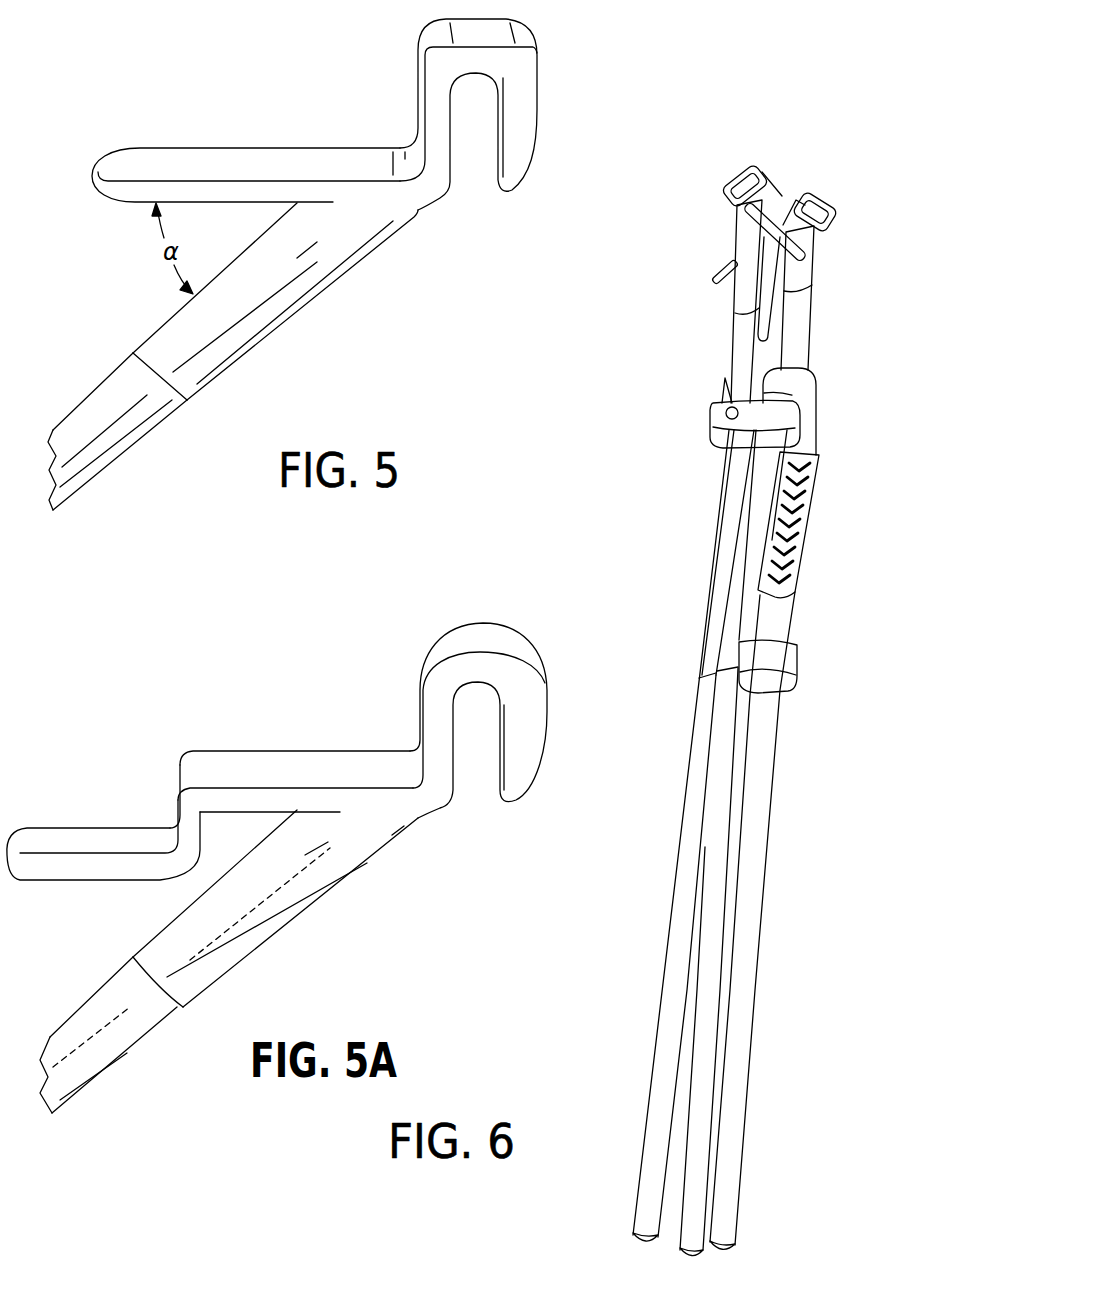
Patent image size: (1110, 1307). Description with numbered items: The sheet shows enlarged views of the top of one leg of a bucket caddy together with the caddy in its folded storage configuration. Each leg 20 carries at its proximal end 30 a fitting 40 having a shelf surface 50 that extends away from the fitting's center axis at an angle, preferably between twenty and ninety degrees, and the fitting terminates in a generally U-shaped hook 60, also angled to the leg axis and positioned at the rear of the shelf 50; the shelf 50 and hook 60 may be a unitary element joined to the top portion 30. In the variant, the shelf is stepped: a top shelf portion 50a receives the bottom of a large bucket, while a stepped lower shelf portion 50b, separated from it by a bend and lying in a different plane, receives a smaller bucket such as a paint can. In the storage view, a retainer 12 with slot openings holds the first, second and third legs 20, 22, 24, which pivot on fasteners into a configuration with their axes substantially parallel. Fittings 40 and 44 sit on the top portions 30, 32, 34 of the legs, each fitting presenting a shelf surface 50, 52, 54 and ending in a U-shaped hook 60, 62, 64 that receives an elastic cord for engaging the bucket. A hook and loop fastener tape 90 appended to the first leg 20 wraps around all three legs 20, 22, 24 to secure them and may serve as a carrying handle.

In FIG. 6, the retainer 12 is at (710, 423).
In FIG. 6, the first leg 20 is at (752, 913).
In FIG. 6, the second leg 22 is at (693, 768).
In FIG. 6, the third leg 24 is at (712, 892).
In FIG. 5, the top portion of first leg 30 is at (102, 445).
In FIG. 5A, the top portion of first leg 30 is at (123, 1053).
In FIG. 6, the top portion of second leg 32 is at (710, 568).
In FIG. 6, the top portion of third leg 34 is at (726, 649).
In FIG. 5, the fitting 40 is at (316, 262).
In FIG. 5A, the fitting 40 is at (320, 877).
In FIG. 6, the fitting 44 is at (745, 243).
In FIG. 5, the shelf surface 50 is at (176, 160).
In FIG. 6, the shelf surface 50 is at (781, 292).
In FIG. 5A, the top shelf portion 50a is at (272, 760).
In FIG. 5A, the stepped lower shelf portion 50b is at (93, 835).
In FIG. 6, the shelf surface 52 is at (712, 278).
In FIG. 6, the shelf surface 54 is at (795, 195).
In FIG. 5, the U-shaped hook 60 is at (528, 117).
In FIG. 5A, the U-shaped hook 60 is at (530, 727).
In FIG. 6, the U-shaped hook 60 is at (833, 200).
In FIG. 6, the U-shaped hook 62 is at (784, 235).
In FIG. 6, the U-shaped hook 64 is at (745, 163).
In FIG. 6, the hook and loop fastener tape 90 is at (818, 470).